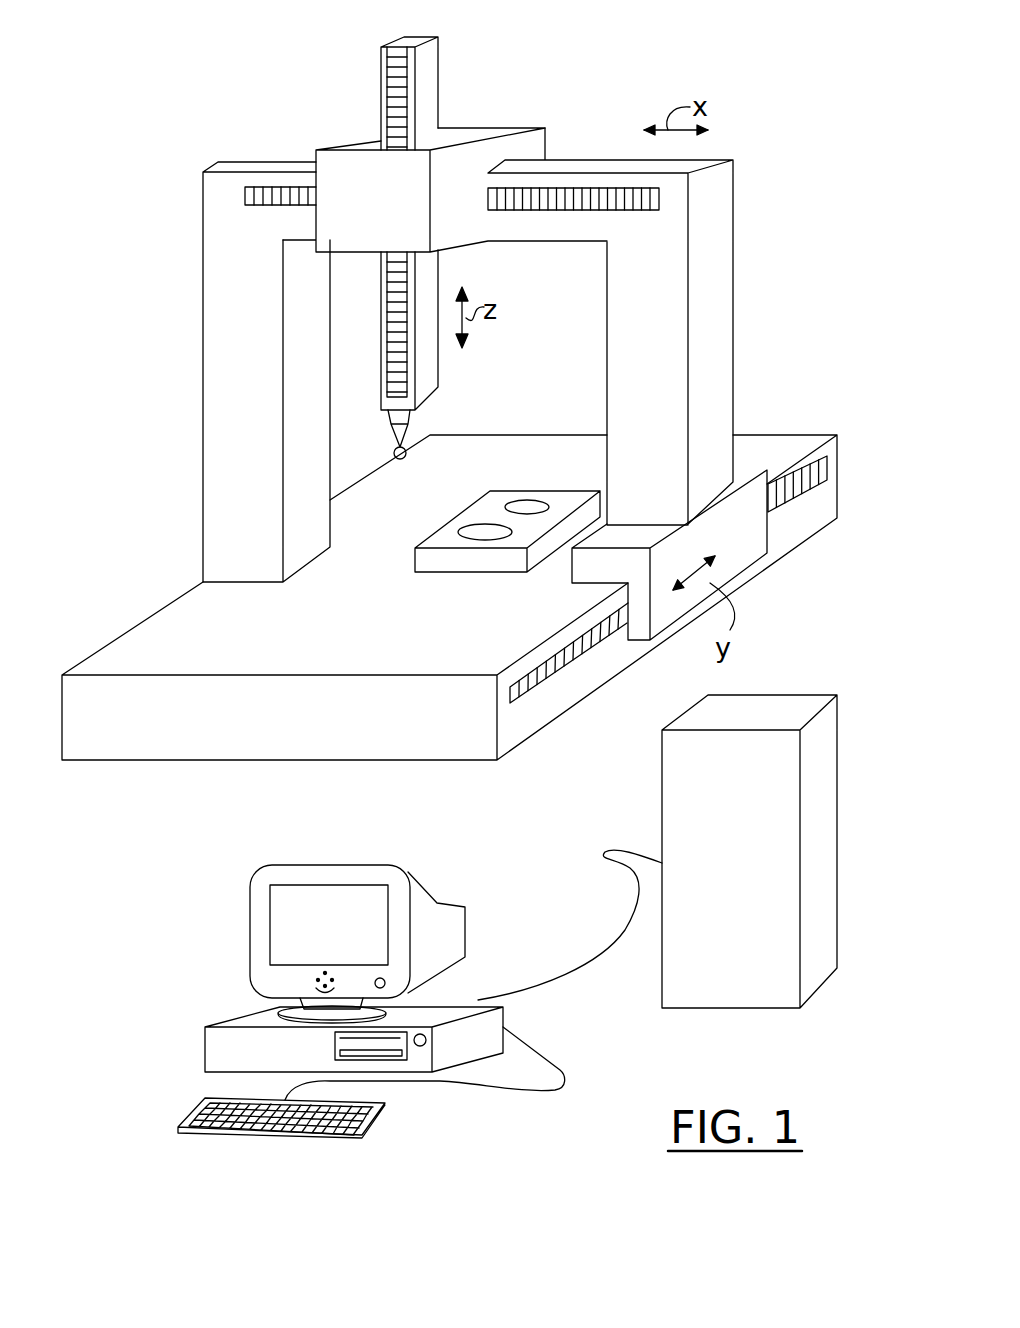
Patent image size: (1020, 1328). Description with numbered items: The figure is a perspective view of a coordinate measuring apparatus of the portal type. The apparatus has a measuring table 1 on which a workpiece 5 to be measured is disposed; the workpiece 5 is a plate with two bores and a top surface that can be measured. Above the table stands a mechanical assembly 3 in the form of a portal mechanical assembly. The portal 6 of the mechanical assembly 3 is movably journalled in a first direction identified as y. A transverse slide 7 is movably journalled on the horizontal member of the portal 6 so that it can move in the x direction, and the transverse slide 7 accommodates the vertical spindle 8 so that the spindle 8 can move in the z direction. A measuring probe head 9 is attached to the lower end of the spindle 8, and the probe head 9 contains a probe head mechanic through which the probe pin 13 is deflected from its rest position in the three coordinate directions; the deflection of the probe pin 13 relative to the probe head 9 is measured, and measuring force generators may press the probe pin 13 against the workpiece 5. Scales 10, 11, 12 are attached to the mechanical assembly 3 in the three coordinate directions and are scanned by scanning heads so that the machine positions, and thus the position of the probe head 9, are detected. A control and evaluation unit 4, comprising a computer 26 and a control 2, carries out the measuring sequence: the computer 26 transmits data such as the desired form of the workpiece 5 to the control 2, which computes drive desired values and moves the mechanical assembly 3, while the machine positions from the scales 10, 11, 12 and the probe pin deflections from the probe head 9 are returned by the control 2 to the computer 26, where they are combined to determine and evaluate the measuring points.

The measuring table 1 is at (788, 450).
The control 2 is at (825, 768).
The mechanical assembly 3 is at (598, 120).
The control and evaluation unit 4 is at (548, 925).
The workpiece 5 is at (470, 545).
The portal 6 is at (212, 453).
The transverse slide 7 is at (533, 128).
The vertical spindle 8 is at (430, 79).
The probe head 9 is at (410, 413).
The scale 10 is at (397, 70).
The scale 11 is at (282, 200).
The scale 12 is at (812, 477).
The probe pin 13 is at (397, 454).
The computer 26 is at (412, 875).